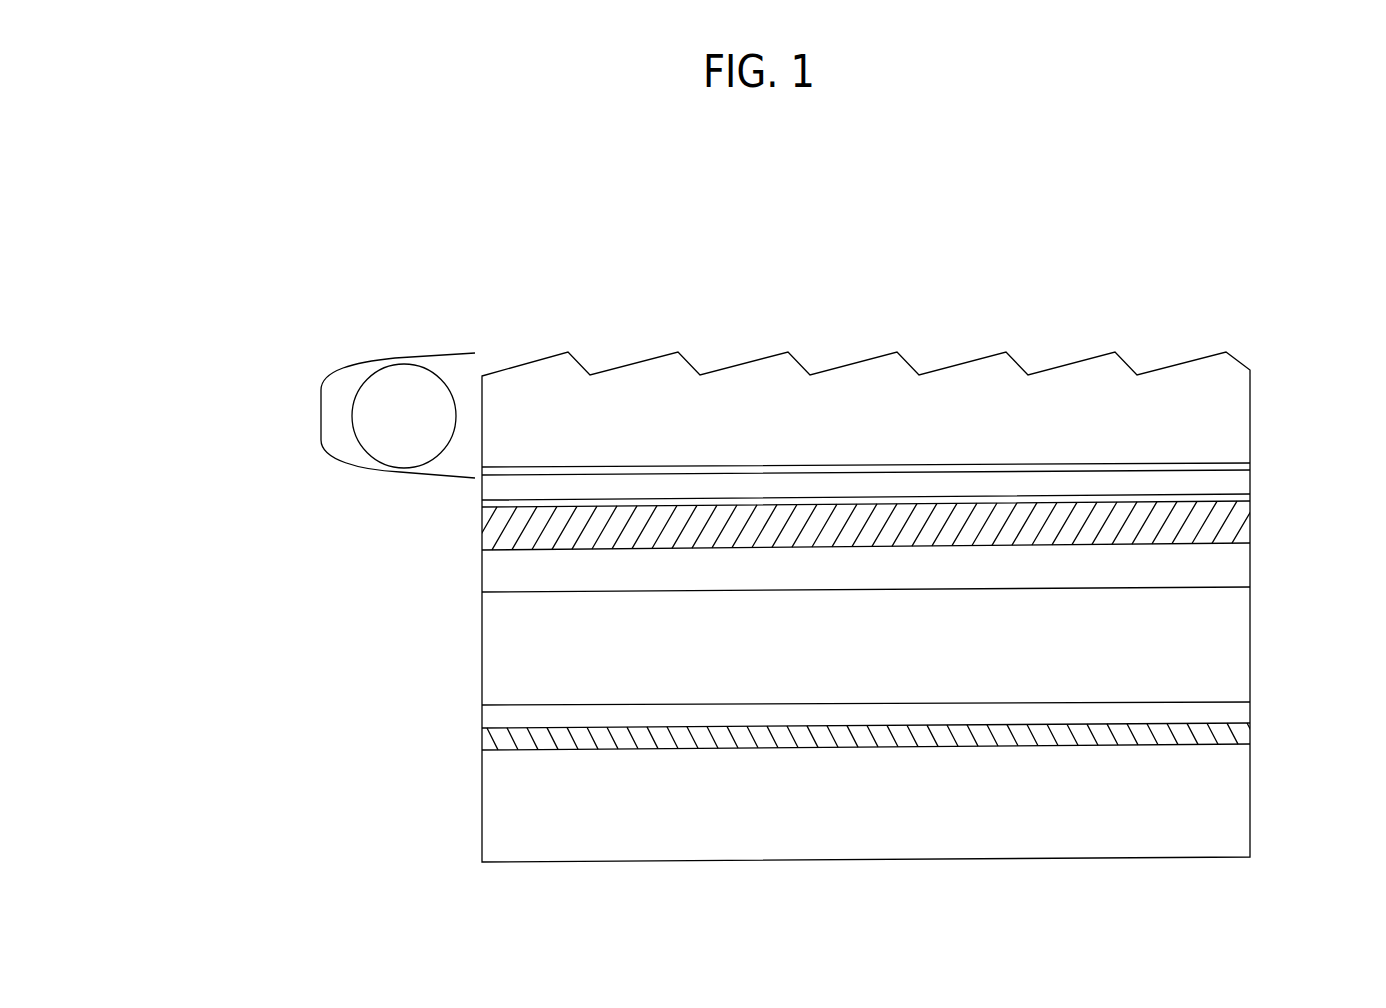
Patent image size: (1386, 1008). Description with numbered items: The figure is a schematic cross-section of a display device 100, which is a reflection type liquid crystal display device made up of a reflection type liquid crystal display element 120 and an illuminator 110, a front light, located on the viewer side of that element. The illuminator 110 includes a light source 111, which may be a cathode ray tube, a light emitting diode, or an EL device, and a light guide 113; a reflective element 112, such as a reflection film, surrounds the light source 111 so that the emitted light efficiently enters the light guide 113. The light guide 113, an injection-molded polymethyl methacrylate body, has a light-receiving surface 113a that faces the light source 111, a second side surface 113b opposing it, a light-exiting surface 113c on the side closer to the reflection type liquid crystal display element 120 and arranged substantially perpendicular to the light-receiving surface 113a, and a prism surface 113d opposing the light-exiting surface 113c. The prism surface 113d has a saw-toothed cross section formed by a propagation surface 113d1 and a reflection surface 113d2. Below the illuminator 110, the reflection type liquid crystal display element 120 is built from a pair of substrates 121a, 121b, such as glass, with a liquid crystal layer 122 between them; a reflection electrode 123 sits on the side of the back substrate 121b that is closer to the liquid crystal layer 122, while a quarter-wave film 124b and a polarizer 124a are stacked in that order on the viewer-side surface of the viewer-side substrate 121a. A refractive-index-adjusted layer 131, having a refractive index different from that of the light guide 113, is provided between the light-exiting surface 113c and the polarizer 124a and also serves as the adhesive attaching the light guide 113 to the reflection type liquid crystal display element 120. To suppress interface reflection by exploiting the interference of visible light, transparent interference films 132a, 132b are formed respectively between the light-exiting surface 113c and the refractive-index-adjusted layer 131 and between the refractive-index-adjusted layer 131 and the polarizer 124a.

The display device 100 is at (233, 233).
The illuminator 110 is at (313, 342).
The light source 111 is at (380, 390).
The reflective element 112 is at (435, 355).
The light guide 113 is at (1090, 390).
The light-receiving surface 113a is at (482, 415).
The second side surface 113b is at (1250, 408).
The light-exiting surface 113c is at (667, 467).
The prism surface 113d is at (1002, 268).
The propagation surface 113d1 is at (852, 364).
The reflection surface 113d2 is at (908, 364).
The reflection type liquid crystal display element 120 is at (316, 515).
The substrate 121a is at (502, 650).
The substrate 121b is at (505, 810).
The liquid crystal layer 122 is at (502, 720).
The reflection electrode 123 is at (502, 742).
The polarizer 124a is at (502, 527).
The λ/4 film 124b is at (502, 572).
The refractive-index-adjusted layer 131 is at (1238, 483).
The interference film 132a is at (1250, 465).
The interference film 132b is at (1250, 499).